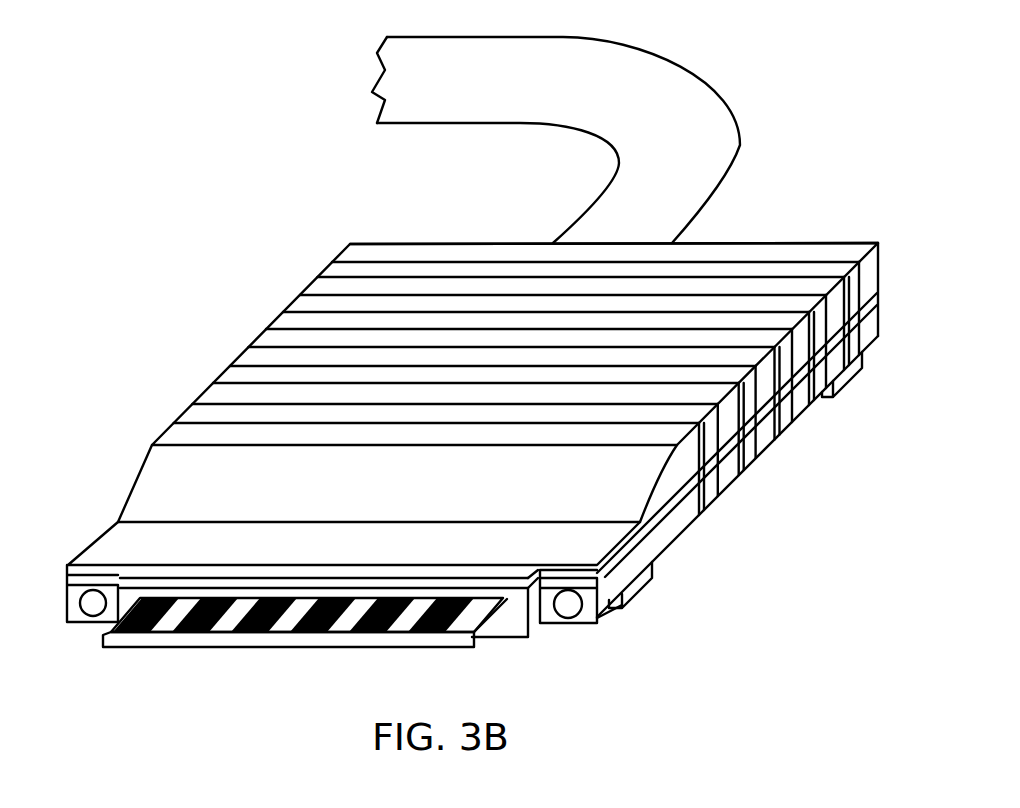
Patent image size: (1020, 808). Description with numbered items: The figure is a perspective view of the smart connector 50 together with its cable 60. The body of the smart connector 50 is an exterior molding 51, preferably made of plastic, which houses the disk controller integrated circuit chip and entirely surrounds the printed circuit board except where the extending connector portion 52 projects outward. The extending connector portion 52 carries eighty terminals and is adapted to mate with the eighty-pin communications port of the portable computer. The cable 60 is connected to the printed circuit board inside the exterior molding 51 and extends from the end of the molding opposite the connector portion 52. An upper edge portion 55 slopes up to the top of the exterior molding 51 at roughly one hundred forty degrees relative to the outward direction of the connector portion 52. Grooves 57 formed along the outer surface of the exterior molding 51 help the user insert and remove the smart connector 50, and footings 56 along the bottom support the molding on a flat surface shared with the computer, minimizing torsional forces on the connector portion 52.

The smart connector 50 is at (482, 218).
The exterior molding 51 is at (380, 243).
The extending connector portion 52 is at (163, 638).
The upper edge portion 55 is at (183, 490).
The footings 56 is at (840, 397).
The grooves 57 is at (273, 320).
The cable 60 is at (741, 144).